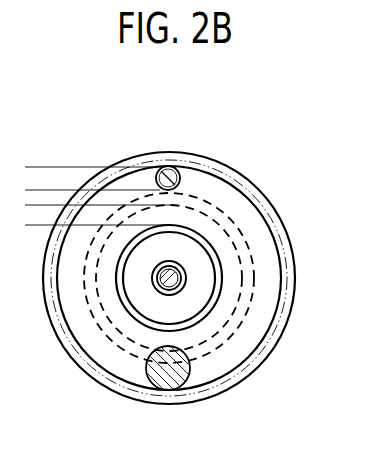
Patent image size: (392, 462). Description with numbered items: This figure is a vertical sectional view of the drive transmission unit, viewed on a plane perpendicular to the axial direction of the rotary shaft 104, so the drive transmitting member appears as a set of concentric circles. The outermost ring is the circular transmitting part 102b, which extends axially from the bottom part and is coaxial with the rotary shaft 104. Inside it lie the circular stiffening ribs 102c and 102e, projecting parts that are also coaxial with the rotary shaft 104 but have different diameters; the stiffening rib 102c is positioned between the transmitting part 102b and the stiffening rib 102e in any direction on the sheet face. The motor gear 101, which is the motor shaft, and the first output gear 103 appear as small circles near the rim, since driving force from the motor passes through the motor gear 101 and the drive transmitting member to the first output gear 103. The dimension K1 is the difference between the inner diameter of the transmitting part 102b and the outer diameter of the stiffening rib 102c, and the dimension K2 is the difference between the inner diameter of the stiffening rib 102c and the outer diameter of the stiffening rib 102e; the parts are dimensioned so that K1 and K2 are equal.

The motor gear 101 is at (178, 172).
The circular transmitting part 102b is at (243, 180).
The stiffening rib 102c is at (220, 343).
The stiffening rib 102e is at (133, 312).
The first output gear 103 is at (155, 372).
The rotary shaft 104 is at (175, 277).
The difference between inner diameter of transmitting part and outer diameter of sti K1 is at (31, 167).
The difference between inner diameter of stiffening rib and outer diameter of stiffe K2 is at (31, 205).